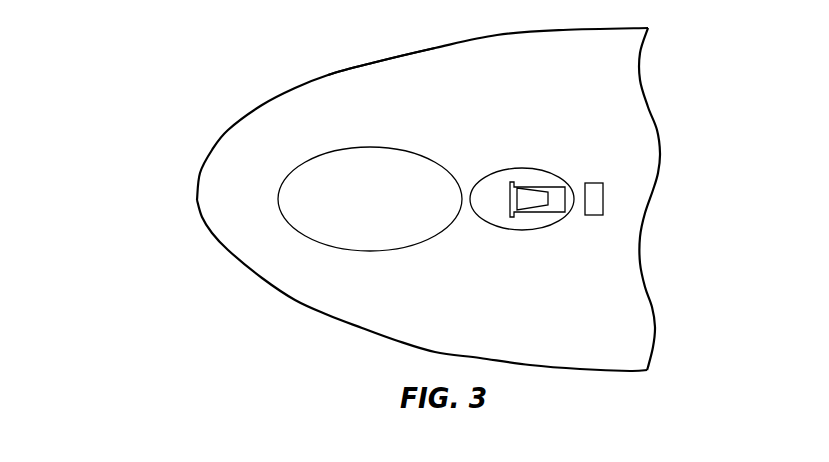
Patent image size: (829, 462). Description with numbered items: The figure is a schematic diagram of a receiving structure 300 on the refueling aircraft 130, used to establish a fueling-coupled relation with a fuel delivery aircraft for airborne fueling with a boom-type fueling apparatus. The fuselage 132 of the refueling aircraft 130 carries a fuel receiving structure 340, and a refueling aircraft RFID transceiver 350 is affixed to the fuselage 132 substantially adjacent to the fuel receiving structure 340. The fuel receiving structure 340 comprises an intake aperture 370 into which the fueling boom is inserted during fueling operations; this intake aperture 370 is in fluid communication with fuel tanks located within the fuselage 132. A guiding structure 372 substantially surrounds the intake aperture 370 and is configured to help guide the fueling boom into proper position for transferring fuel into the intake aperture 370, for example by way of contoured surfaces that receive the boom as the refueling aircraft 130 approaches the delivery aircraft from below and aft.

The receiving structure 300 is at (158, 36).
The refueling aircraft 130 is at (189, 147).
The fuselage 132 is at (373, 63).
The fuel receiving structure 340 is at (540, 169).
The refueling aircraft RFID transceiver 350 is at (594, 183).
The intake aperture 370 is at (532, 193).
The guiding structure 372 is at (523, 215).